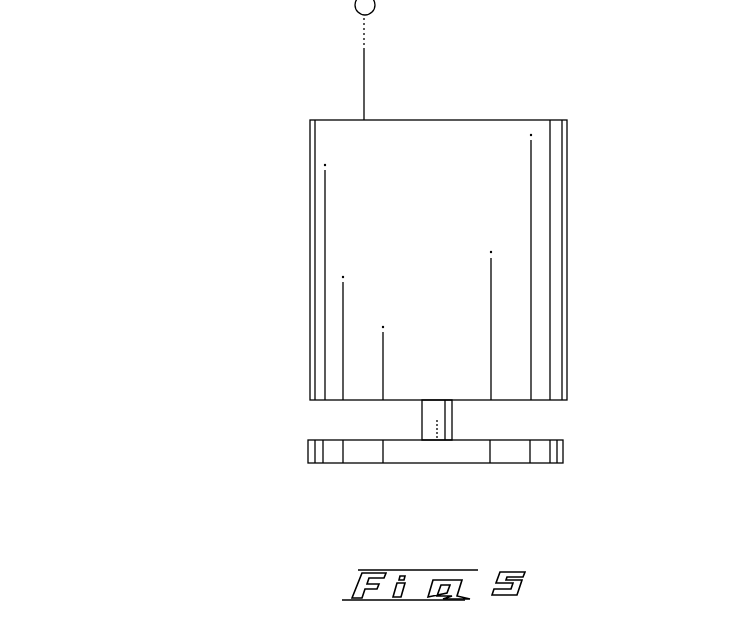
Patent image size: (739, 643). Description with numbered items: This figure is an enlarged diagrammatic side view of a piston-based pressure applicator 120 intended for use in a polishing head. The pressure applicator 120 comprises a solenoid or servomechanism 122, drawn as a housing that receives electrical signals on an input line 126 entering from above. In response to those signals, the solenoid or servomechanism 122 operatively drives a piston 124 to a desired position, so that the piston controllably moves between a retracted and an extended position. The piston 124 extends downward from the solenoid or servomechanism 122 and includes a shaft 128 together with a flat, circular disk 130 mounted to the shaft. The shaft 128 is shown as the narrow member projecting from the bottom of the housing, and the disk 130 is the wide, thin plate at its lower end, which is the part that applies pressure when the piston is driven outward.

The pressure applicator 120 is at (213, 235).
The solenoid or servomechanism 122 is at (510, 308).
The piston 124 is at (508, 425).
The input line 126 is at (364, 64).
The shaft 128 is at (432, 428).
The flat, circular disk 130 is at (402, 452).